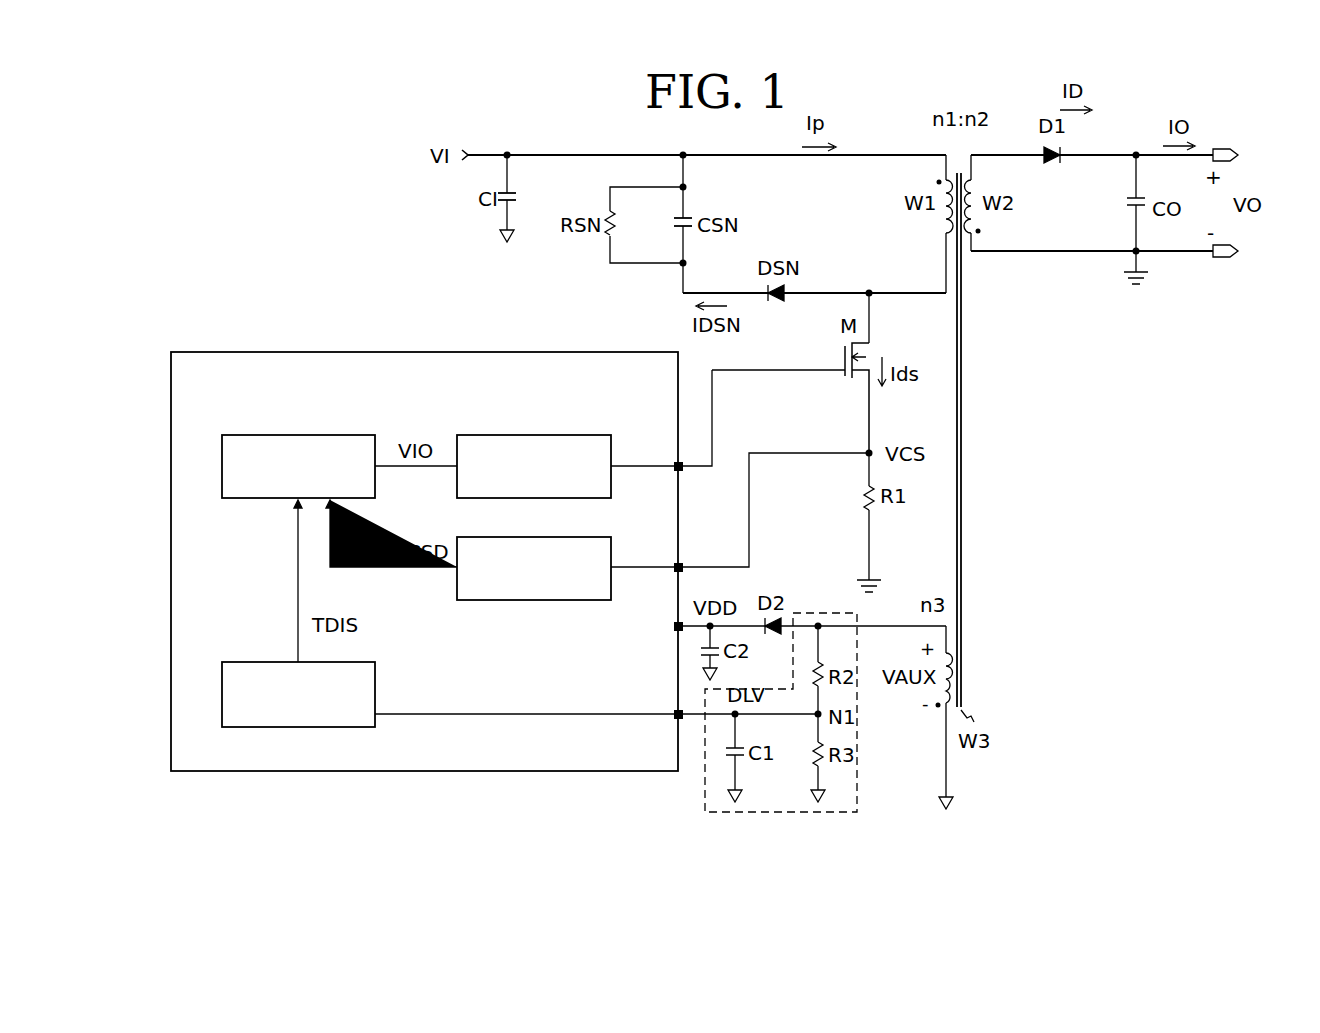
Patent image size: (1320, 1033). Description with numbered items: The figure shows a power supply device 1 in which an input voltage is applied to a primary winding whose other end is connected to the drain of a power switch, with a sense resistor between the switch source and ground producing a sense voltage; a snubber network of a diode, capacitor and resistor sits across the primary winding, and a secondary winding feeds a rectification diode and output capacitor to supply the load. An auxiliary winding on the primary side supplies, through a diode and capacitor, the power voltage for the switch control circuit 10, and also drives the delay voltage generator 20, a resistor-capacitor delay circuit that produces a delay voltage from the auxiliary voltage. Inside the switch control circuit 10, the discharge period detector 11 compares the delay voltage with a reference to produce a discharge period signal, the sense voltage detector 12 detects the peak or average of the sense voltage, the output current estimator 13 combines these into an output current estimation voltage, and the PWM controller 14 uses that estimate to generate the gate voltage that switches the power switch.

The power supply device 1 is at (1203, 100).
The switch control circuit 10 is at (424, 352).
The discharge period detector 11 is at (375, 678).
The sense voltage detector 12 is at (533, 600).
The output current estimator 13 is at (295, 435).
The PWM controller 14 is at (532, 435).
The delay voltage generator 20 is at (857, 792).